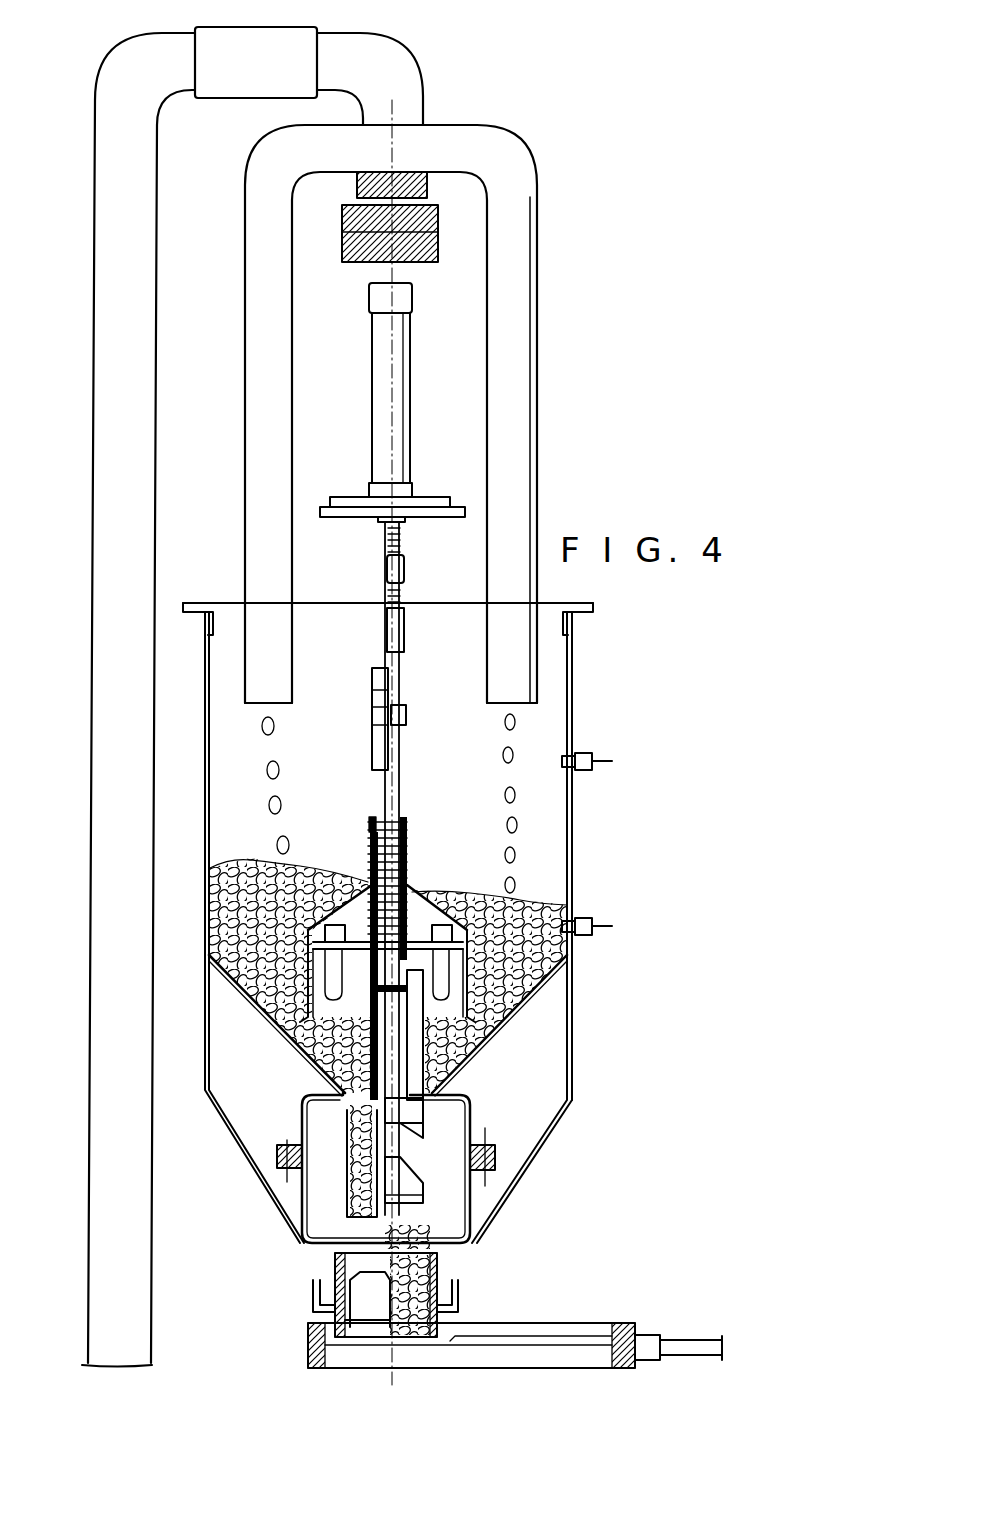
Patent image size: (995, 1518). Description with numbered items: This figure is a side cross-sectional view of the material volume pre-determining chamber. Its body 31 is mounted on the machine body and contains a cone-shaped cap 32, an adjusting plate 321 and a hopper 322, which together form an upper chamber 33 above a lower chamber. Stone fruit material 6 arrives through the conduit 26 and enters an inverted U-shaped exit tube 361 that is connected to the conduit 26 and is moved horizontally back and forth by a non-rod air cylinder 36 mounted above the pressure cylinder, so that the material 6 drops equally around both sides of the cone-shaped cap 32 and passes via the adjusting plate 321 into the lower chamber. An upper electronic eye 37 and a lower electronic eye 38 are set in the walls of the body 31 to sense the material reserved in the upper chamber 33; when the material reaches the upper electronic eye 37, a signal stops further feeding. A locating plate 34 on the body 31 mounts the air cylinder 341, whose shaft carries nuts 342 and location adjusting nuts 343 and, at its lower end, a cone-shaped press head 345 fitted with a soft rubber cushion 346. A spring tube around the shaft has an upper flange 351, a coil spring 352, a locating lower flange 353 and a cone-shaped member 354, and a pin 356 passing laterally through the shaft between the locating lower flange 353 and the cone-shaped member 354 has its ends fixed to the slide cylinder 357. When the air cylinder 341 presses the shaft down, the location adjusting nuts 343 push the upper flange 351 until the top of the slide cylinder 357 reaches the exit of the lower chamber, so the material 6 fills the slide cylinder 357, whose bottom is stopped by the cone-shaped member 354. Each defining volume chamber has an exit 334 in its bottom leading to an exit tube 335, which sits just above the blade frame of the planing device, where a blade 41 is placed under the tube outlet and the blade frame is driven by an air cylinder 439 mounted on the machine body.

The conduit 26 is at (108, 521).
The non-rod air cylinder 36 is at (438, 215).
The air cylinder 341 is at (398, 362).
The locating plate 34 is at (433, 512).
The inverted U-shaped exit tube 361 is at (520, 427).
The nut 342 is at (400, 571).
The location adjusting nuts 343 is at (406, 720).
The upper electronic eye 37 is at (590, 755).
The upper flange 351 is at (407, 830).
The coil spring 352 is at (407, 855).
The upper chamber 33 is at (528, 880).
The material 6 is at (220, 877).
The cone-shaped cap 32 is at (420, 893).
The body 31 is at (570, 863).
The lower electronic eye 38 is at (590, 935).
The locating lower flange 353 is at (370, 987).
The adjusting plate 321 is at (462, 1018).
The hopper 322 is at (455, 1048).
The pin 356 is at (330, 1128).
The slide cylinder 357 is at (290, 1165).
The cone-shaped member 354 is at (340, 1193).
The exit 334 is at (360, 1243).
The exit tube 335 is at (437, 1270).
The cone-shaped press head 345 is at (370, 1300).
The blade 41 is at (505, 1337).
The air cylinder 439 is at (665, 1335).
The soft rubber cushion 346 is at (450, 1346).